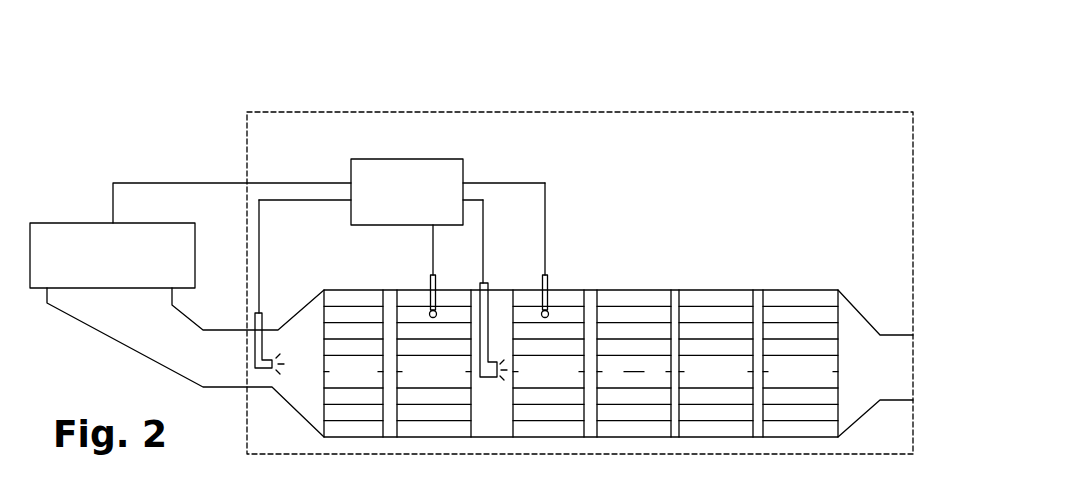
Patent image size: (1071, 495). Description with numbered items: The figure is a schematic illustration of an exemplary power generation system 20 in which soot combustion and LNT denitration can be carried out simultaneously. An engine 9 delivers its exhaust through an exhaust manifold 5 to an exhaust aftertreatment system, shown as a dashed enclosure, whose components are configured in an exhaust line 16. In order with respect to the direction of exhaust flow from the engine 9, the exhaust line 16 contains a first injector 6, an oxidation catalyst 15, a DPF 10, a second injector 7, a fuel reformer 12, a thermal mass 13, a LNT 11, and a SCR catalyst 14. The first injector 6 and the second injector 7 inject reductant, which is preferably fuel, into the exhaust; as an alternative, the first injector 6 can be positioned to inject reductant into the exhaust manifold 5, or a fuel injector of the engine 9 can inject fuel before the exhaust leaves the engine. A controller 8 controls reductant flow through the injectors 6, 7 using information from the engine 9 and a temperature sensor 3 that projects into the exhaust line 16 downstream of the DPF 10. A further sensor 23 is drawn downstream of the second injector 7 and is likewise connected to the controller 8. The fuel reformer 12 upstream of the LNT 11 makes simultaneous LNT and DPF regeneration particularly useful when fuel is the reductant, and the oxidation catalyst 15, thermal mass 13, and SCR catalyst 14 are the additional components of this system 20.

The power generation system 20 is at (172, 102).
The engine 9 is at (98, 233).
The controller 8 is at (450, 172).
The exhaust manifold 5 is at (172, 358).
The first injector 6 is at (262, 322).
The exhaust line 16 is at (319, 418).
The oxidation catalyst 15 is at (353, 298).
The DPF 10 is at (417, 295).
The temperature sensor 3 is at (436, 280).
The second injector 7 is at (486, 297).
The NOx sensor 23 is at (552, 277).
The fuel reformer 12 is at (565, 300).
The thermal mass 13 is at (632, 300).
The LNT 11 is at (709, 302).
The SCR catalyst 14 is at (796, 302).